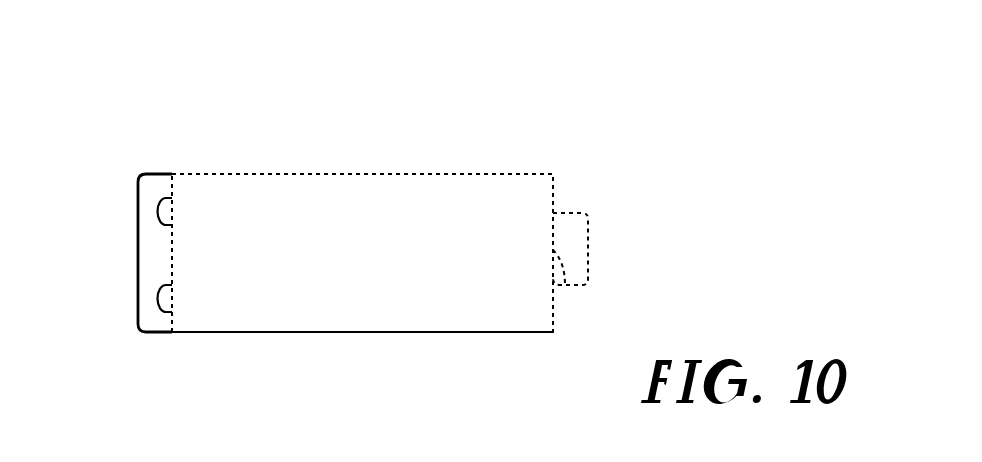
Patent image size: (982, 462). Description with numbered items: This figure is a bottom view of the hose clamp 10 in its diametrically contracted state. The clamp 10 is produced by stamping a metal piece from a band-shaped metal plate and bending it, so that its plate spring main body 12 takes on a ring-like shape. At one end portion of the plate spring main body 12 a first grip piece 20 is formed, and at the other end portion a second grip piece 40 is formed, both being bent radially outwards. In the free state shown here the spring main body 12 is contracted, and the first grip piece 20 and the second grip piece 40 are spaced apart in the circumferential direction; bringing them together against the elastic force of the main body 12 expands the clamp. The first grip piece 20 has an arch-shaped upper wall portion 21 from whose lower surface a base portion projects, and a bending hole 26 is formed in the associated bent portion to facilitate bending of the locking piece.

The clamp 10 is at (363, 174).
The plate spring main body 12 is at (372, 314).
The first grip piece 20 is at (92, 278).
The upper wall portion 21 is at (146, 251).
The bending hole 26 is at (129, 283).
The second grip piece 40 is at (594, 247).